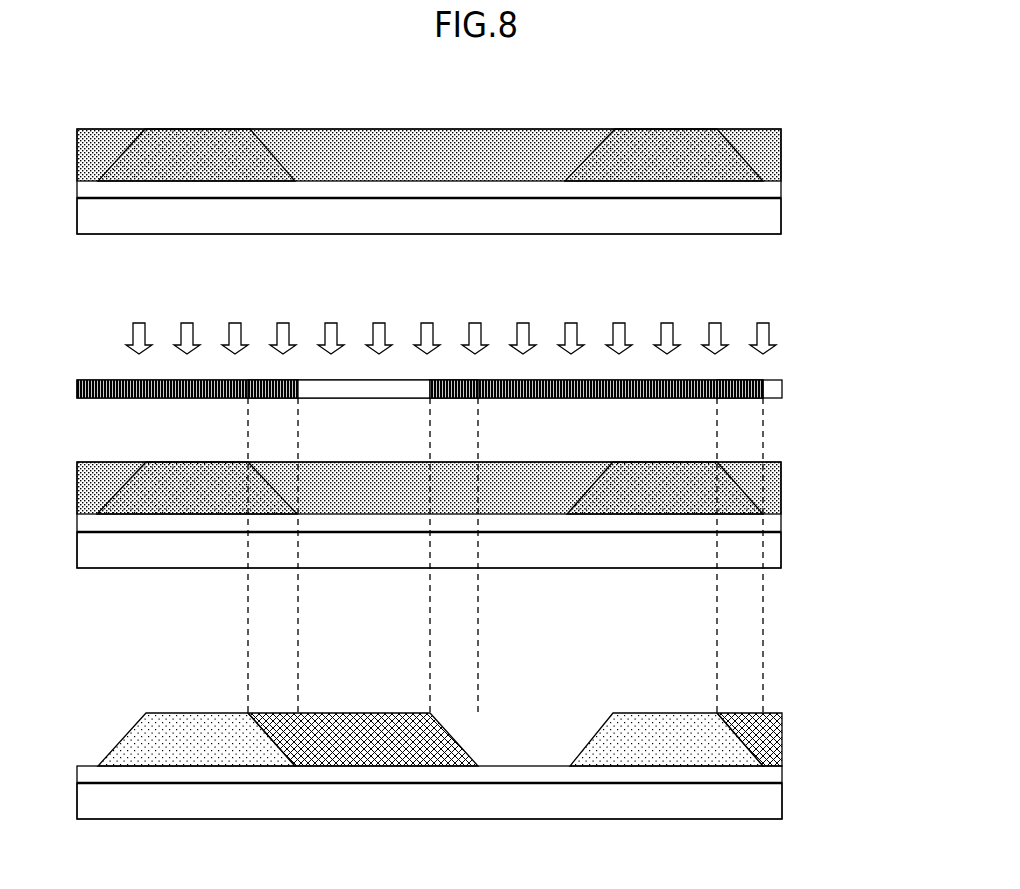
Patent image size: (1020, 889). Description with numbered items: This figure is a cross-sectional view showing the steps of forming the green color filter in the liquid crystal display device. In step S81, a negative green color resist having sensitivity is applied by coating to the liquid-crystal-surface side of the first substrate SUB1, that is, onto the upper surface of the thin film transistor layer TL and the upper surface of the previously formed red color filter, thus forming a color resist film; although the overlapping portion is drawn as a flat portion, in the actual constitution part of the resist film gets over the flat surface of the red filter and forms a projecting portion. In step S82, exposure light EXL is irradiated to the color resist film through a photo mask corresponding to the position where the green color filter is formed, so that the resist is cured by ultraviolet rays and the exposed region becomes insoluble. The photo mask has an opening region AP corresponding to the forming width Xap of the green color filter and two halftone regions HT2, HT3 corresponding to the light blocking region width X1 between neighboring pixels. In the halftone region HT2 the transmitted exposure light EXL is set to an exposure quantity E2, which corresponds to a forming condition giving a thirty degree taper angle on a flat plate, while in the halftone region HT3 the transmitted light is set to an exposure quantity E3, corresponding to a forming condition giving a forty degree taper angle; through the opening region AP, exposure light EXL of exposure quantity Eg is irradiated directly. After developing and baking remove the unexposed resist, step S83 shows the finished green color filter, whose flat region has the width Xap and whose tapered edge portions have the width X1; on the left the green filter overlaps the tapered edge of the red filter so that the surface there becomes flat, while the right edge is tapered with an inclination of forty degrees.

The step of forming color resist film S81 is at (770, 108).
The exposure step S82 is at (790, 349).
The developing and baking step S83 is at (790, 682).
The thin film transistor layer TL is at (503, 187).
The first substrate SUB1 is at (682, 222).
The exposure light EXL is at (400, 325).
The halftone region HT2 is at (277, 380).
The halftone region HT3 is at (450, 380).
The opening region AP is at (358, 381).
The exposure quantity E2 is at (268, 447).
The exposure quantity E3 is at (455, 447).
The exposure quantity Eg is at (368, 447).
The light blocking region width X1 is at (297, 648).
The forming width Xap is at (429, 648).